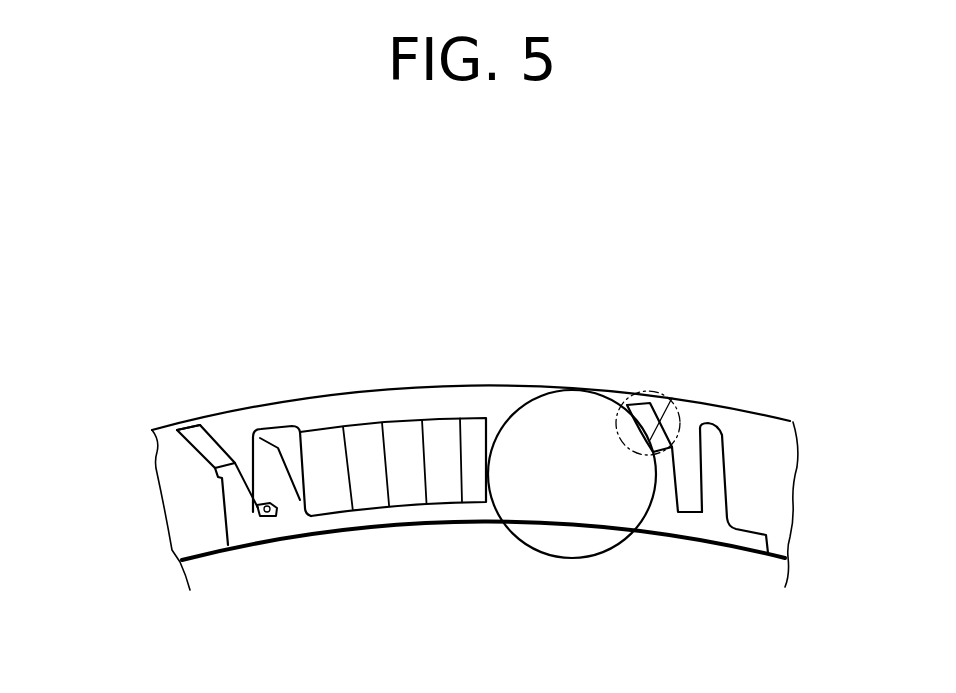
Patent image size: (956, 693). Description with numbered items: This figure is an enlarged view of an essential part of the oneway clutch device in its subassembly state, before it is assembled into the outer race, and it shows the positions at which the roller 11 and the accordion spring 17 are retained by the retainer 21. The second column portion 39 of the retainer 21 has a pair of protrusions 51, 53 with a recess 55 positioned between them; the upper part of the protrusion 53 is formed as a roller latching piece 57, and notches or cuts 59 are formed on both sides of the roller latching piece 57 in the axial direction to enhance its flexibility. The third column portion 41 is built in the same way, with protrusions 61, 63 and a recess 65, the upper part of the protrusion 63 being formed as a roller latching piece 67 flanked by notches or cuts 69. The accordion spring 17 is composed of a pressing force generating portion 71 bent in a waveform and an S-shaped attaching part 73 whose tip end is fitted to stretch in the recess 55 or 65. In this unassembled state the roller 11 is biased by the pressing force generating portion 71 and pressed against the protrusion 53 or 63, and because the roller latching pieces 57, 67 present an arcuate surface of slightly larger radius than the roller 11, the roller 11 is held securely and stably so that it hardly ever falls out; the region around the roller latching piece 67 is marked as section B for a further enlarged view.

The roller 11 is at (568, 413).
The accordion spring 17 is at (393, 385).
The retainer 21 is at (425, 540).
The second column portion 39 is at (174, 462).
The third column portion 41 is at (714, 388).
The protrusion 51 is at (264, 391).
The protrusion 53 is at (237, 505).
The recess 55 is at (275, 516).
The roller latching piece 57 is at (160, 406).
The notches or cuts 59 is at (207, 447).
The protrusion 61 is at (756, 439).
The protrusion 63 is at (665, 478).
The recess 65 is at (688, 503).
The roller latching piece 67 is at (640, 393).
The notches or cuts 69 is at (673, 397).
The pressing force generating portion 71 is at (365, 437).
The S-shaped attaching part 73 is at (257, 505).
The section B is at (665, 390).